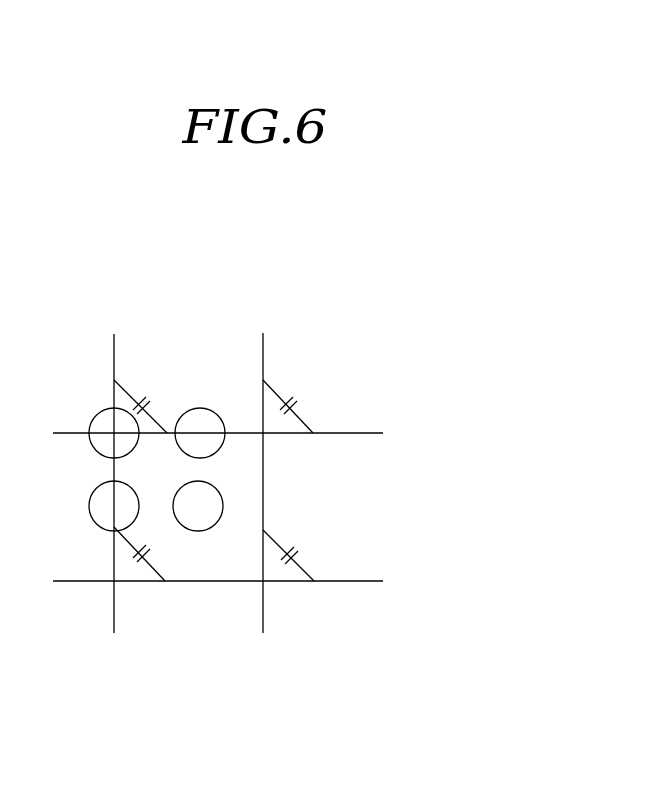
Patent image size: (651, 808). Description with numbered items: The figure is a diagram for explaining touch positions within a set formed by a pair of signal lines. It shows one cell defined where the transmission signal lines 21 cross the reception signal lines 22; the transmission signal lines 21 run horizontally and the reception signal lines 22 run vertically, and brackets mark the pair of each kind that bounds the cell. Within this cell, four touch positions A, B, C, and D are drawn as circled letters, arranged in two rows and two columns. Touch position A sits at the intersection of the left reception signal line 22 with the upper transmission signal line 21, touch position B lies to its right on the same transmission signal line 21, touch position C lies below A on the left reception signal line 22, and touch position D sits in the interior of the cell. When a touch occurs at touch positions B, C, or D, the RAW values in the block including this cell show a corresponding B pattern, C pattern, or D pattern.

The transmission signal line 21 is at (395, 415).
The reception signal line 22 is at (100, 313).
The touch position A is at (114, 433).
The touch position B is at (200, 433).
The touch position C is at (114, 506).
The touch position D is at (198, 506).